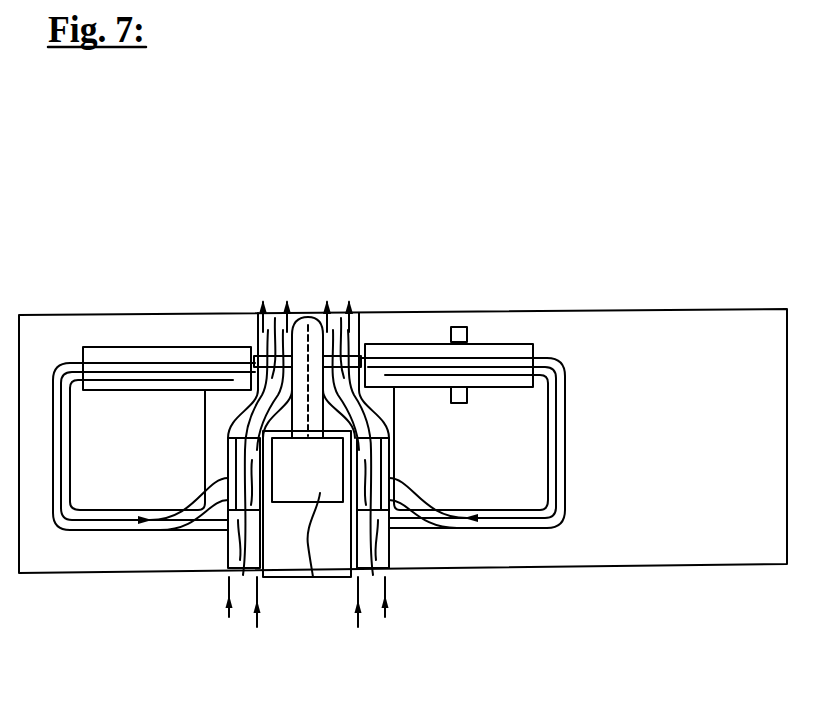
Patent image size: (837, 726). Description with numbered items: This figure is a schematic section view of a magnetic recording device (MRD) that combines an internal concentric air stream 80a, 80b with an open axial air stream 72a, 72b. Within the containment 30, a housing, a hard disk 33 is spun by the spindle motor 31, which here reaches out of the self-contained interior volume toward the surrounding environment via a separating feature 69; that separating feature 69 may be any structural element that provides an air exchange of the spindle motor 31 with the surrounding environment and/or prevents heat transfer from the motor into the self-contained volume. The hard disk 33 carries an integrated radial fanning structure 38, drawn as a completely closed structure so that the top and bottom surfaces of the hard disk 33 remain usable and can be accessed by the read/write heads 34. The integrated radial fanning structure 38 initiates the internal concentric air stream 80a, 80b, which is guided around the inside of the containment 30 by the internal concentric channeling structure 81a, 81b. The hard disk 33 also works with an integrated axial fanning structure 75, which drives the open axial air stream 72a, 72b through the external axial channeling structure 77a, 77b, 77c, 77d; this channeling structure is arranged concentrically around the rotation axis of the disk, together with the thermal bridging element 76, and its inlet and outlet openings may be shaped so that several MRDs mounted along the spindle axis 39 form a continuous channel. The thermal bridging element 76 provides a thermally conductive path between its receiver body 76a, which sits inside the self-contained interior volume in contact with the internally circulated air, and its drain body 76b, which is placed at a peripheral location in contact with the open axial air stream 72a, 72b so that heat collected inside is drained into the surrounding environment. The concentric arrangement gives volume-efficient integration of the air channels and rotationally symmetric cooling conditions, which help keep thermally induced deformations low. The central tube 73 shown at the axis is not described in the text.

The containment 30 is at (57, 314).
The hard disk 33 is at (112, 352).
The integrated radial fanning structure 38 is at (513, 363).
The read/write heads 34 is at (458, 395).
The central tube 73 is at (308, 315).
The integrated axial fanning structure 75 is at (340, 366).
The external axial channeling structure 77a is at (207, 572).
The external axial channeling structure 77b is at (412, 572).
The external axial channeling structure 77c is at (359, 340).
The external axial channeling structure 77d is at (258, 340).
The open axial air stream 72a is at (248, 578).
The open axial air stream 72b is at (382, 580).
The separating feature 69 is at (330, 574).
The spindle axis 39 is at (308, 490).
The spindle motor 31 is at (313, 578).
The thermal bridging element 76 is at (228, 478).
The receiver body 76a is at (228, 500).
The drain body 76b is at (228, 550).
The internal concentric air stream 80a is at (123, 531).
The internal concentric air stream 80b is at (520, 520).
The internal concentric channeling structure 81a is at (70, 532).
The internal concentric channeling structure 81b is at (568, 522).